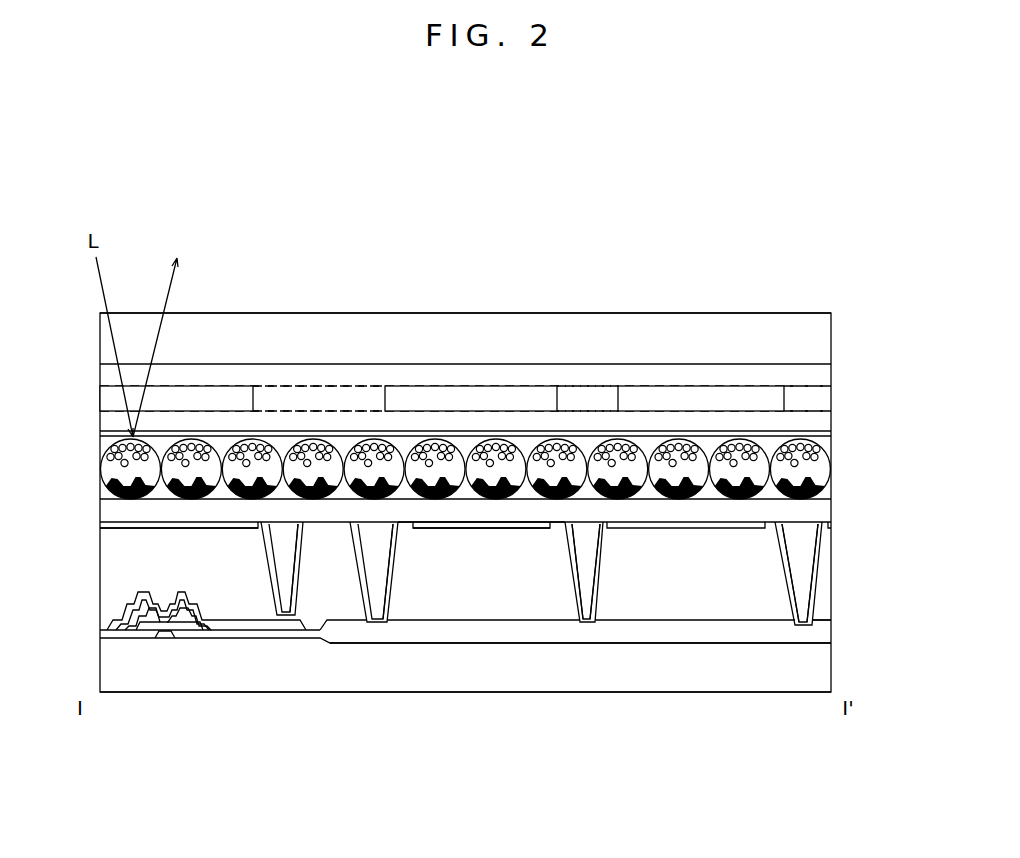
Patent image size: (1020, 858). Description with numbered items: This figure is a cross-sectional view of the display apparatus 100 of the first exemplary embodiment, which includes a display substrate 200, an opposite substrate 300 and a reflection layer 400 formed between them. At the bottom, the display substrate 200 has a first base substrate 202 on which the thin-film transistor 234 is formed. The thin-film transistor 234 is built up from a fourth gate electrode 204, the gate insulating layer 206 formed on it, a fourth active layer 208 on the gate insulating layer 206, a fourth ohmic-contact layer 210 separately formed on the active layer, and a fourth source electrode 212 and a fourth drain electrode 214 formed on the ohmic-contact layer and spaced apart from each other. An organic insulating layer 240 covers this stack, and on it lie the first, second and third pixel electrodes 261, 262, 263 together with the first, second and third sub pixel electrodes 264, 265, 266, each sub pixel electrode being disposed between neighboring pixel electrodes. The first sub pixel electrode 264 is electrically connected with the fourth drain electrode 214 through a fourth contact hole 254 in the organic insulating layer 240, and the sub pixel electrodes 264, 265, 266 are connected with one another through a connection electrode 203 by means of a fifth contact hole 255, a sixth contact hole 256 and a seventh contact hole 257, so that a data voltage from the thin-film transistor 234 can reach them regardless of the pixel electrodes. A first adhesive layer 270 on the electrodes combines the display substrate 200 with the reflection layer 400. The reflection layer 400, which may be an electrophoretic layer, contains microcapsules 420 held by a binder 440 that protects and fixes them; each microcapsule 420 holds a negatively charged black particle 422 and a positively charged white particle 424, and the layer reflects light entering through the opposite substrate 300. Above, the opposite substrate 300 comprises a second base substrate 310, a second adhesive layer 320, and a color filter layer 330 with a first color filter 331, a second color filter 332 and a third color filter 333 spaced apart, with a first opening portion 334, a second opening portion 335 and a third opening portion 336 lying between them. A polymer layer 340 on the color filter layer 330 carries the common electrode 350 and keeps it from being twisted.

The display apparatus 100 is at (785, 195).
The display substrate 200 is at (96, 501).
The first base substrate 202 is at (831, 664).
The connection electrode 203 is at (532, 637).
The fourth gate electrode 204 is at (163, 634).
The gate insulating layer 206 is at (262, 637).
The fourth active layer 208 is at (184, 628).
The fourth ohmic-contact layer 210 is at (137, 618).
The fourth source electrode 212 is at (118, 625).
The fourth drain electrode 214 is at (228, 622).
The thin-film transistor 234 is at (282, 785).
The organic insulating layer 240 is at (831, 584).
The fourth contact hole 254 is at (285, 592).
The fifth contact hole 255 is at (375, 592).
The sixth contact hole 256 is at (590, 592).
The seventh contact hole 257 is at (822, 692).
The first pixel electrode 261 is at (225, 530).
The second pixel electrode 262 is at (498, 535).
The third pixel electrode 263 is at (776, 530).
The first sub pixel electrode 264 is at (446, 530).
The second sub pixel electrode 265 is at (565, 530).
The third sub pixel electrode 266 is at (802, 607).
The first adhesive layer 270 is at (831, 517).
The opposite substrate 300 is at (96, 317).
The second base substrate 310 is at (831, 329).
The second adhesive layer 320 is at (831, 373).
The color filter layer 330 is at (831, 399).
The first color filter 331 is at (248, 380).
The second color filter 332 is at (410, 380).
The third color filter 333 is at (682, 384).
The first opening portion 334 is at (313, 380).
The second opening portion 335 is at (588, 384).
The third opening portion 336 is at (802, 382).
The polymer layer 340 is at (831, 424).
The common electrode 350 is at (831, 449).
The reflection layer 400 is at (96, 438).
The microcapsule 420 is at (831, 470).
The black particle 422 is at (497, 485).
The white particle 424 is at (487, 442).
The binder 440 is at (831, 494).